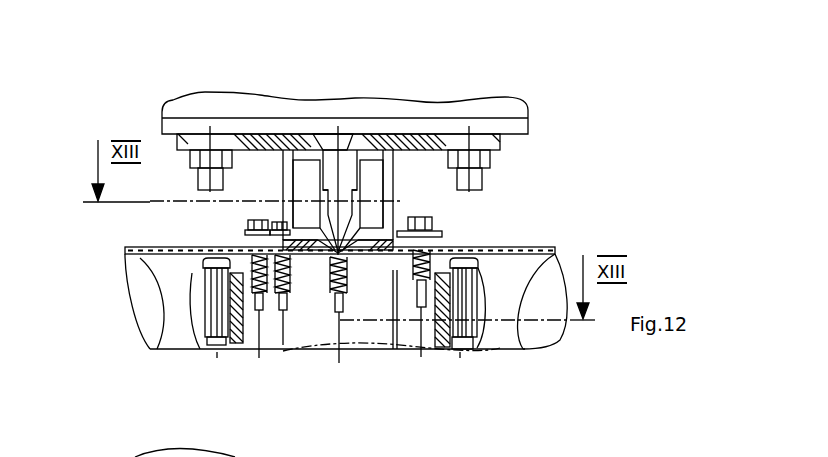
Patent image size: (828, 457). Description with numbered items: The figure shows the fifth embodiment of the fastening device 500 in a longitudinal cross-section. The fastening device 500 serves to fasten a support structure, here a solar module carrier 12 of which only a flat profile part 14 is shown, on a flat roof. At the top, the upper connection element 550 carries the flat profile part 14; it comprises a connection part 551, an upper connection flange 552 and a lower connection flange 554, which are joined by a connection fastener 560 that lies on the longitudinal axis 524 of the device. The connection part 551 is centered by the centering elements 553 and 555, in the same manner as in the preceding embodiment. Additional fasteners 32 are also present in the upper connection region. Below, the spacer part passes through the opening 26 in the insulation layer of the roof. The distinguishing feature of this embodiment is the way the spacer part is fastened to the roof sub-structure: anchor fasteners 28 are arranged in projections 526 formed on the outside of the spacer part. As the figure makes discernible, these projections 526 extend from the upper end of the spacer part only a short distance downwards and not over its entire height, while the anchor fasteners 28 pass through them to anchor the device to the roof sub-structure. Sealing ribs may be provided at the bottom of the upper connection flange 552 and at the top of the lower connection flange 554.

The solar module carrier 12 is at (437, 80).
The flat profile part 14 is at (495, 143).
The fastening device 500 is at (627, 190).
The upper connection element 550 is at (265, 180).
The connection fastener 560 is at (328, 134).
The connection part 551 is at (393, 190).
The upper connection flange 552 is at (245, 240).
The additional fastener 32 is at (250, 226).
The opening (in the insulation layer) 26 is at (197, 292).
The projection 526 is at (483, 323).
The anchor fastener 28 is at (473, 347).
The centering element 555 is at (332, 258).
The centering element 553 is at (337, 260).
The lower connection flange 554 is at (430, 280).
The longitudinal axis 524 is at (338, 350).